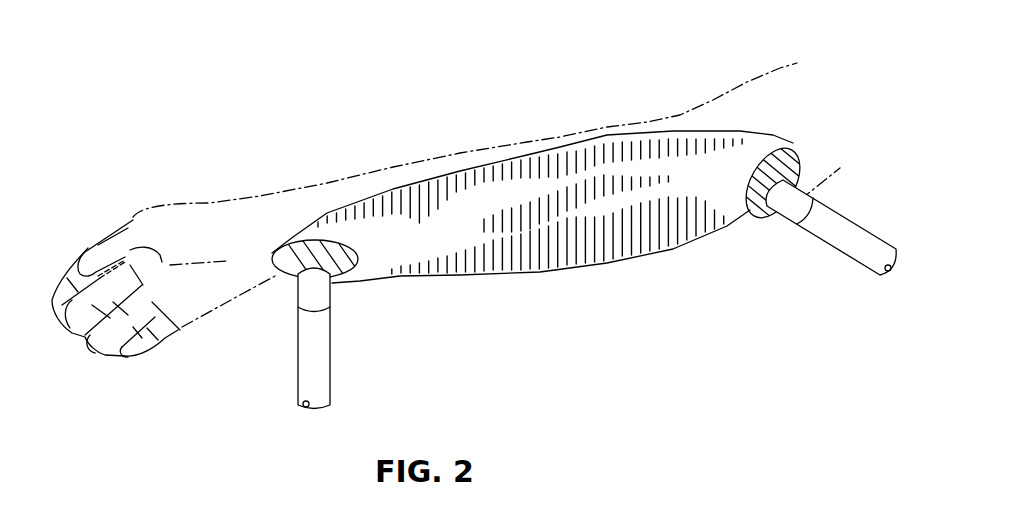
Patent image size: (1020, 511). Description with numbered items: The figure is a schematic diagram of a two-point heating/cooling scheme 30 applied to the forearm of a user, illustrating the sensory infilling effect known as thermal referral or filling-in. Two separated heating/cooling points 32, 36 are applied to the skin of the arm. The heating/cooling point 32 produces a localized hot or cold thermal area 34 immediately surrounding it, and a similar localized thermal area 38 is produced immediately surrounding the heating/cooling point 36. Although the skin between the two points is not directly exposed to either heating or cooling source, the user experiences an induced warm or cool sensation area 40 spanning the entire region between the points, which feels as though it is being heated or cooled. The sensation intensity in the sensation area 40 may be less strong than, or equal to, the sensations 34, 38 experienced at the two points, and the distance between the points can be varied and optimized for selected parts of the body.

The two-point heating/cooling scheme 30 is at (178, 58).
The heating/cooling point 32 is at (323, 292).
The localized hot or cold thermal area 34 is at (273, 250).
The heating/cooling point 36 is at (787, 217).
The localized thermal area 38 is at (790, 163).
The induced warm or cool sensation area 40 is at (527, 177).